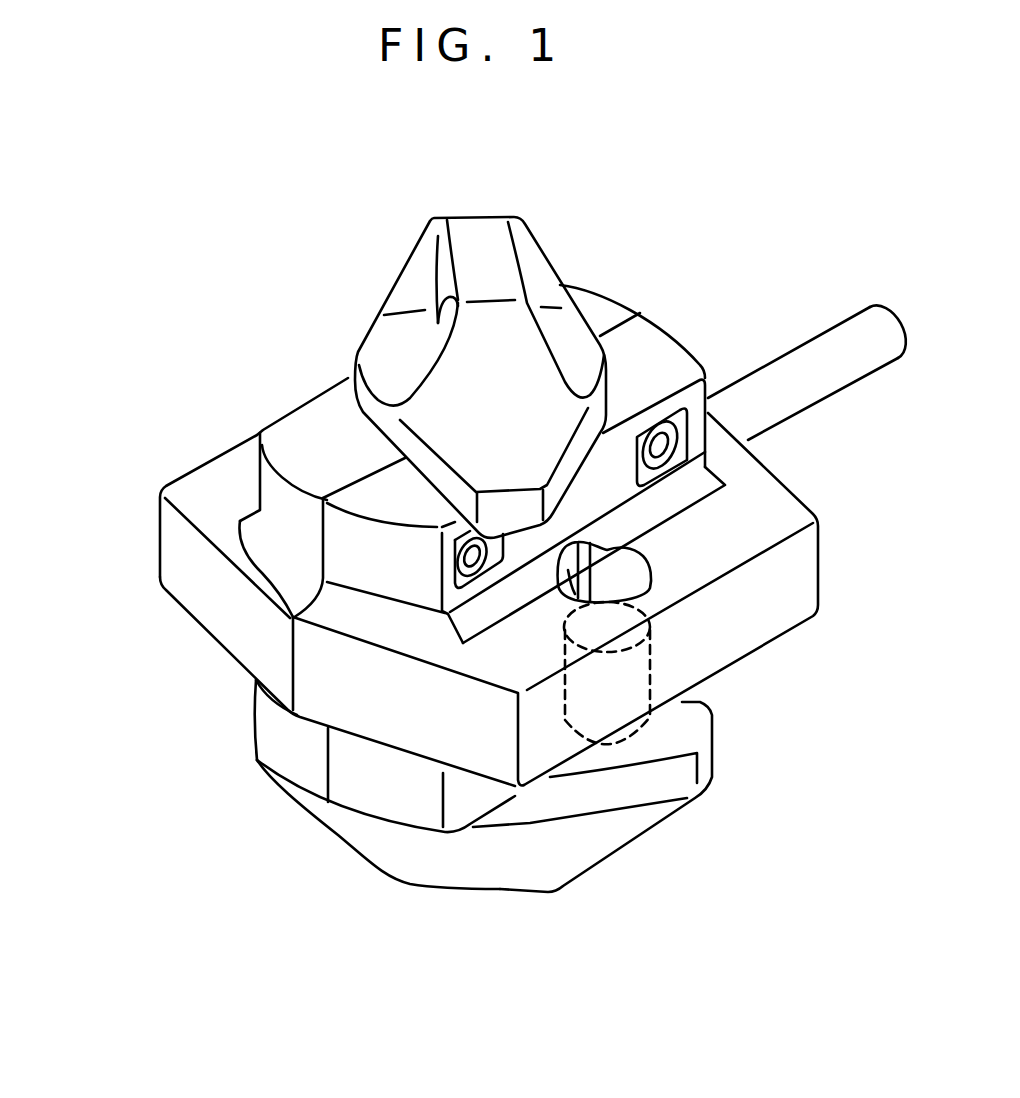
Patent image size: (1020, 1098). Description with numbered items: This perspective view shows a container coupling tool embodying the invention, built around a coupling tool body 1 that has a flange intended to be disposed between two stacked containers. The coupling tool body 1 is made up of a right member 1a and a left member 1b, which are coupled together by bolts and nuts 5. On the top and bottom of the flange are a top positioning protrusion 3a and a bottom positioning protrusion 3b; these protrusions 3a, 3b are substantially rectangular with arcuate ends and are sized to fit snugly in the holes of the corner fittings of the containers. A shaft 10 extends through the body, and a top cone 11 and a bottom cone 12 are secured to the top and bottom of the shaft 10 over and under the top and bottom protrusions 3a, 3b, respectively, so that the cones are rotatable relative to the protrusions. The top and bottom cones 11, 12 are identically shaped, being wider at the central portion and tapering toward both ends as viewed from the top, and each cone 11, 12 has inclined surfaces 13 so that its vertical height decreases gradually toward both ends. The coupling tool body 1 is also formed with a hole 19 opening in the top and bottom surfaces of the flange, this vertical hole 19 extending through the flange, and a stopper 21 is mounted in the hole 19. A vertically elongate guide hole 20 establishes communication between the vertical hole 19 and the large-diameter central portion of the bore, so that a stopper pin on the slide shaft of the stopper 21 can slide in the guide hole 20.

The coupling tool body 1 is at (158, 484).
The right member 1a is at (233, 462).
The left member 1b is at (803, 588).
The top positioning protrusion 3a is at (290, 527).
The bottom positioning protrusion 3b is at (292, 742).
The nut 5 is at (676, 440).
The shaft 10 is at (843, 330).
The top cone 11 is at (477, 218).
The bottom cone 12 is at (680, 777).
The inclined surface 13 is at (625, 833).
The hole 19 is at (632, 574).
The guide hole 20 is at (563, 603).
The stopper 21 is at (640, 667).